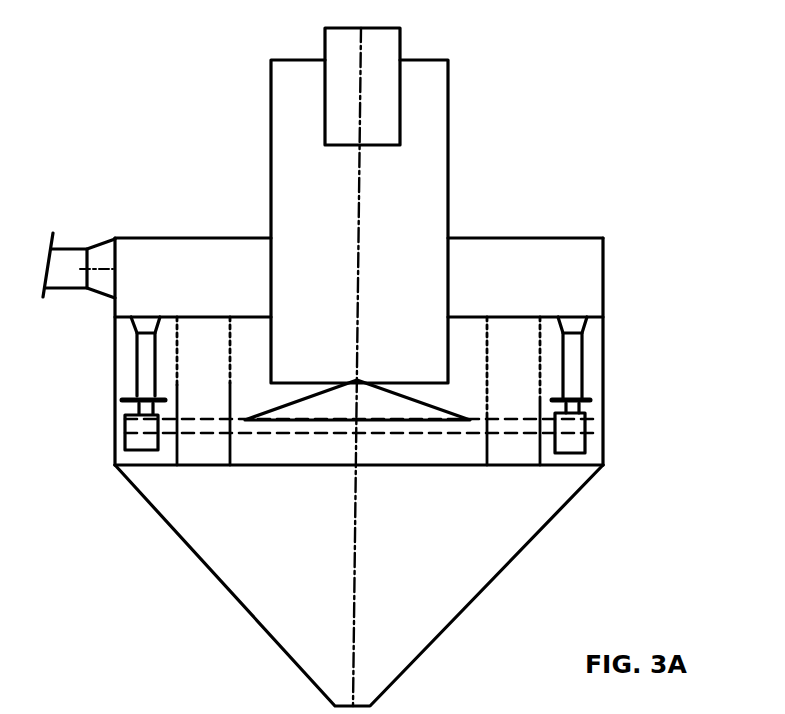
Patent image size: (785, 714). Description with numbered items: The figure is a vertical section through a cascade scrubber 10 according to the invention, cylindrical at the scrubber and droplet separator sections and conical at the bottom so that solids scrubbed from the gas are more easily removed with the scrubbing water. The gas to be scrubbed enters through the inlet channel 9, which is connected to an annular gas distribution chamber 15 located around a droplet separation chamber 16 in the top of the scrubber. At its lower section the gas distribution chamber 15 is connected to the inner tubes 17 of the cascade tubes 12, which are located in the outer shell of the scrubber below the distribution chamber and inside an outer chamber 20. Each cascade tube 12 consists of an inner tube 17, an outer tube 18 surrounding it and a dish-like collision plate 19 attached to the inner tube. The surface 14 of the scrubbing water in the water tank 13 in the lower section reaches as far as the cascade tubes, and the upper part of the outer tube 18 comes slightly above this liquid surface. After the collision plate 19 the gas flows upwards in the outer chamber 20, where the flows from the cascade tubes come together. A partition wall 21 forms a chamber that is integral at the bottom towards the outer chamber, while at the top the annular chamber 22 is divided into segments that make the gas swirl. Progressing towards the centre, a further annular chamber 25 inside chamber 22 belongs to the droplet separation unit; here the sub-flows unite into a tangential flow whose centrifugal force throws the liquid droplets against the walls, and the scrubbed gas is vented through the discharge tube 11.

The inlet channel 9 is at (66, 249).
The scrubber 10 is at (650, 353).
The droplet separator unit discharge tube 11 is at (400, 40).
The cascade tubes 12 is at (583, 372).
The water tank 13 is at (543, 513).
The surface of the scrubbing water 14 is at (200, 418).
The annular gas distribution chamber 15 is at (593, 262).
The droplet separation chamber 16 is at (437, 202).
The inner tubes 17 is at (135, 367).
The outer tube 18 is at (128, 440).
The dish-like collision plate 19 is at (125, 402).
The outer chamber 20 is at (123, 353).
The partition wall 21 is at (172, 442).
The annular chamber 22 is at (588, 481).
The further annular chamber 25 is at (575, 333).